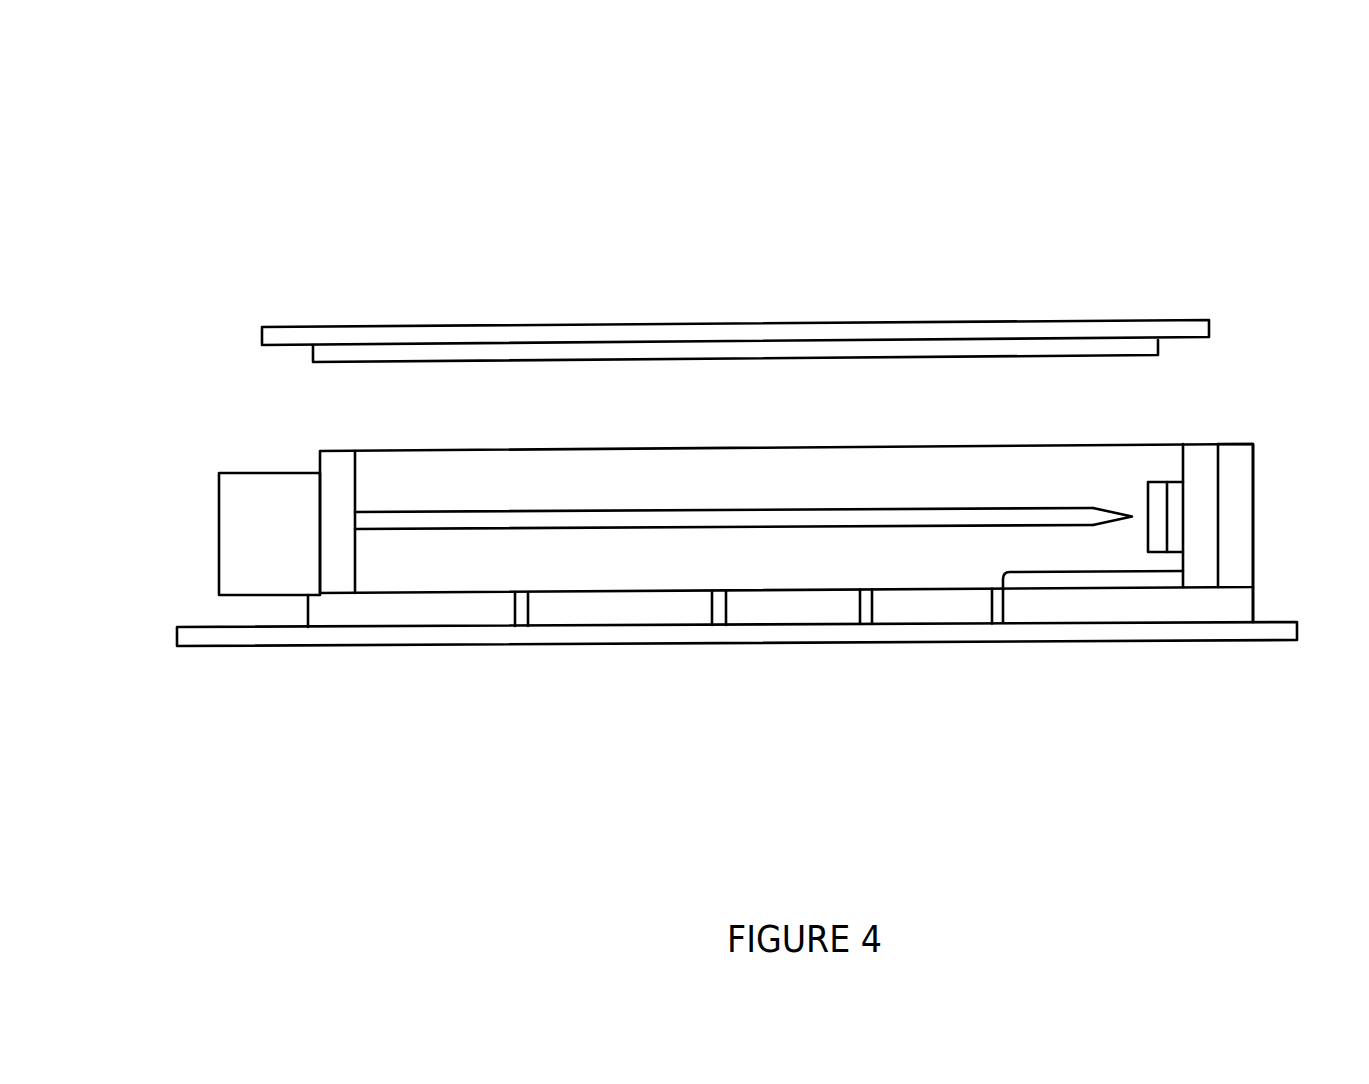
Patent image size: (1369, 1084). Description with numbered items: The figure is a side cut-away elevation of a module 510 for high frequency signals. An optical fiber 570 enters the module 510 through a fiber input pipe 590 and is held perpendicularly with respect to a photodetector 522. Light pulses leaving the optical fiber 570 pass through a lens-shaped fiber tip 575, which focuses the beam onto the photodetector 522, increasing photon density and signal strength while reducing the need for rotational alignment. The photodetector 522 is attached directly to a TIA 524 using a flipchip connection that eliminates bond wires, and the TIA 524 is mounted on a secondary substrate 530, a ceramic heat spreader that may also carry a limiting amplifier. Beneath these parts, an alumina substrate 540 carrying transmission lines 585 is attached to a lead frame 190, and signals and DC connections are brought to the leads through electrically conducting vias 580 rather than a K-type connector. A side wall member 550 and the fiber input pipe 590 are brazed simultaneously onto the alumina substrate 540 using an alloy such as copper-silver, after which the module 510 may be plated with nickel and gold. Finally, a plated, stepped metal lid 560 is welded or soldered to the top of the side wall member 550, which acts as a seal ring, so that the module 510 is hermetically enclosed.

The module 510 is at (1072, 253).
The stepped metal lid 560 is at (728, 328).
The fiber input pipe 590 is at (302, 547).
The optical fiber 570 is at (718, 520).
The lens-shaped fiber tip 575 is at (1108, 506).
The photodetector 522 is at (1158, 498).
The TIA 524 is at (1175, 500).
The secondary substrate 530 is at (1208, 568).
The side wall member 550 is at (1247, 575).
The transmission lines 585 is at (1075, 580).
The vias 580 is at (1015, 593).
The alumina substrate 540 is at (841, 593).
The lead frame 190 is at (648, 641).